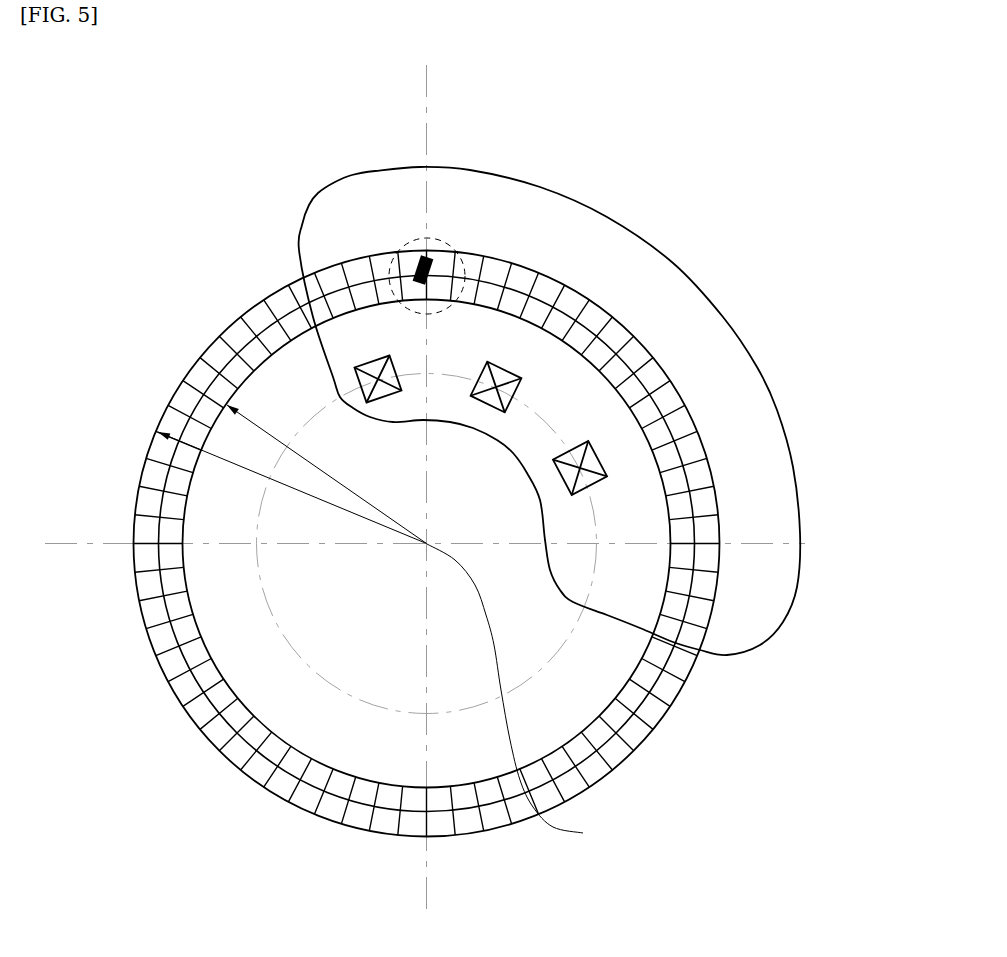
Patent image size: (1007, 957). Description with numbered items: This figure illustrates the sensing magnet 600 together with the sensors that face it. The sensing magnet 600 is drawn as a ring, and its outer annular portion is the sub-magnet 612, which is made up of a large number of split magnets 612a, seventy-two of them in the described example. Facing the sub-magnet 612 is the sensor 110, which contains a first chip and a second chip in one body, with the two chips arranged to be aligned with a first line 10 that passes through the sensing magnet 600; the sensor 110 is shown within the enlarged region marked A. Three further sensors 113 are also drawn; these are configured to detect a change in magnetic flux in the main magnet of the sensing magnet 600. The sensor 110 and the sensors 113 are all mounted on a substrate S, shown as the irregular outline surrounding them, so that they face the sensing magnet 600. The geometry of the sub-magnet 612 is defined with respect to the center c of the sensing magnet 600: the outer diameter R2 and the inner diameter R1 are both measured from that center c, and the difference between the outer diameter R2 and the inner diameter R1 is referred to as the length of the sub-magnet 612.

The first line 10 is at (425, 87).
The sensor 110 is at (427, 257).
The sensors 113 is at (363, 353).
The sensing magnet 600 is at (385, 576).
The sub-magnet 612 is at (358, 832).
The split magnets 612a is at (298, 795).
The detail region A is at (443, 247).
The substrate S is at (773, 388).
The inner diameter R1 is at (327, 472).
The outer diameter R2 is at (292, 488).
The center c is at (514, 696).